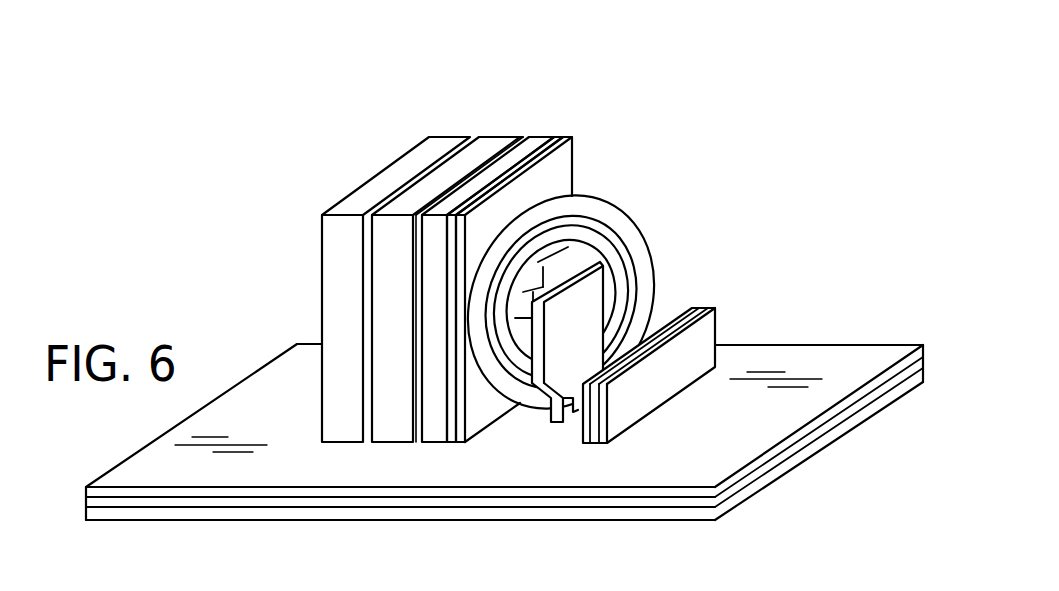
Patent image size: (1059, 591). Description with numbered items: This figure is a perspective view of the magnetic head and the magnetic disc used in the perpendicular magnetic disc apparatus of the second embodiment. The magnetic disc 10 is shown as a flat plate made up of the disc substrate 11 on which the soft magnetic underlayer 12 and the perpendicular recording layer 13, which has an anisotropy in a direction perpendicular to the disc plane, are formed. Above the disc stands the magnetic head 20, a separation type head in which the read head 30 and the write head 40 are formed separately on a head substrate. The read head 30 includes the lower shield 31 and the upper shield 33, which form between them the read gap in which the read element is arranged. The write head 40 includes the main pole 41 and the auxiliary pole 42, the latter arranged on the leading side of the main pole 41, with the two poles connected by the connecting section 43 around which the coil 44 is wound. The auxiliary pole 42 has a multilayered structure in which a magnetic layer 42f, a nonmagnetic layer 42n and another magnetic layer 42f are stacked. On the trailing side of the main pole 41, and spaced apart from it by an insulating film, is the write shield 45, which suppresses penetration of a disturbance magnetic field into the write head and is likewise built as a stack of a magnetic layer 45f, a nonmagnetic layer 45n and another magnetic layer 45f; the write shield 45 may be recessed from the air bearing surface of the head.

The magnetic disc 10 is at (504, 454).
The disc substrate 11 is at (748, 492).
The soft magnetic underlayer 12 is at (782, 458).
The perpendicular recording layer 13 is at (826, 418).
The magnetic head 20 is at (787, 55).
The read head 30 is at (418, 270).
The lower shield 31 is at (352, 437).
The upper shield 33 is at (405, 438).
The write head 40 is at (597, 305).
The main pole 41 is at (557, 428).
The auxiliary pole 42 is at (526, 317).
The magnetic layer 42f is at (545, 137).
The nonmagnetic layer 42n is at (560, 137).
The connecting section 43 is at (545, 277).
The coil 44 is at (588, 197).
The write shield 45 is at (693, 354).
The magnetic layer 45f is at (694, 304).
The nonmagnetic layer 45n is at (706, 304).